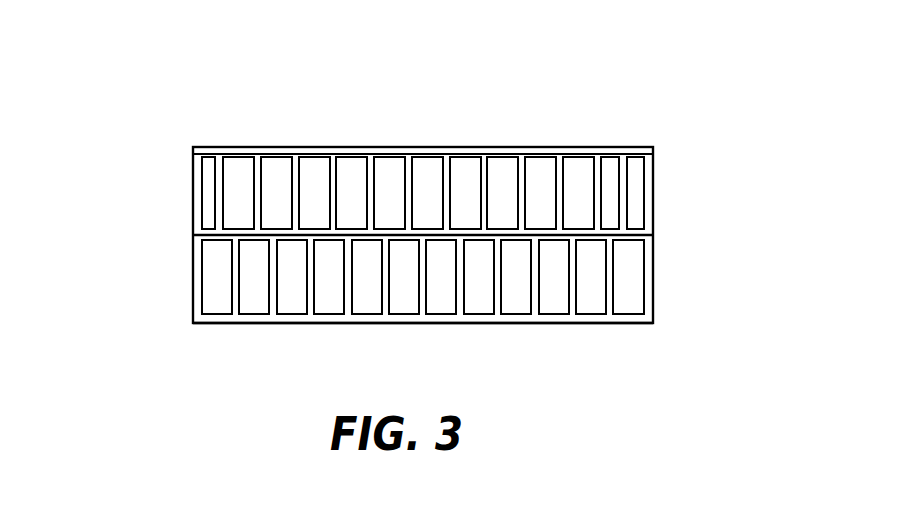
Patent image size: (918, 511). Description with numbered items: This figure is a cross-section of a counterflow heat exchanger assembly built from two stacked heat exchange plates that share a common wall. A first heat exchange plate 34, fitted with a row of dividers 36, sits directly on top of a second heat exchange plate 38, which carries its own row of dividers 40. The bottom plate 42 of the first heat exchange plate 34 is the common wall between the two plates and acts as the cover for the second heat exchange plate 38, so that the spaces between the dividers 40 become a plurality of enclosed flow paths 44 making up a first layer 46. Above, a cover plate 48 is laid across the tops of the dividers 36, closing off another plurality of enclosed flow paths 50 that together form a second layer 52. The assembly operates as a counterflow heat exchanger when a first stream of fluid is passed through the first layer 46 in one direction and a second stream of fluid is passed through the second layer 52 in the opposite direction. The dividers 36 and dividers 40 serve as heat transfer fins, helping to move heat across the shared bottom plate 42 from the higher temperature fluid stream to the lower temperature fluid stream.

The first heat exchange plate 34 is at (665, 202).
The dividers 36 is at (414, 142).
The second heat exchange plate 38 is at (233, 330).
The dividers 40 is at (445, 311).
The bottom plate 42 is at (635, 233).
The enclosed flow paths 44 is at (247, 281).
The first layer 46 is at (396, 311).
The cover plate 48 is at (475, 149).
The enclosed flow paths 50 is at (155, 171).
The second layer 52 is at (414, 142).